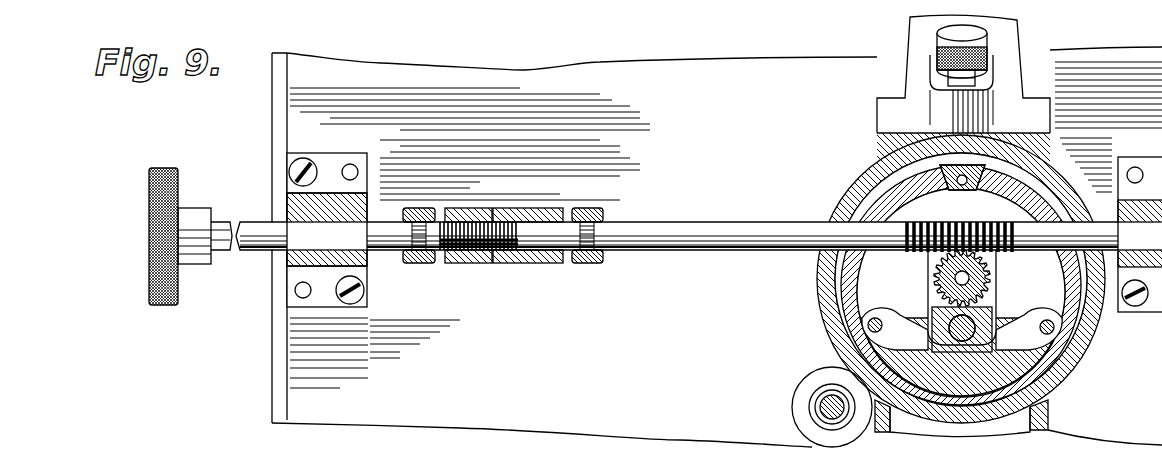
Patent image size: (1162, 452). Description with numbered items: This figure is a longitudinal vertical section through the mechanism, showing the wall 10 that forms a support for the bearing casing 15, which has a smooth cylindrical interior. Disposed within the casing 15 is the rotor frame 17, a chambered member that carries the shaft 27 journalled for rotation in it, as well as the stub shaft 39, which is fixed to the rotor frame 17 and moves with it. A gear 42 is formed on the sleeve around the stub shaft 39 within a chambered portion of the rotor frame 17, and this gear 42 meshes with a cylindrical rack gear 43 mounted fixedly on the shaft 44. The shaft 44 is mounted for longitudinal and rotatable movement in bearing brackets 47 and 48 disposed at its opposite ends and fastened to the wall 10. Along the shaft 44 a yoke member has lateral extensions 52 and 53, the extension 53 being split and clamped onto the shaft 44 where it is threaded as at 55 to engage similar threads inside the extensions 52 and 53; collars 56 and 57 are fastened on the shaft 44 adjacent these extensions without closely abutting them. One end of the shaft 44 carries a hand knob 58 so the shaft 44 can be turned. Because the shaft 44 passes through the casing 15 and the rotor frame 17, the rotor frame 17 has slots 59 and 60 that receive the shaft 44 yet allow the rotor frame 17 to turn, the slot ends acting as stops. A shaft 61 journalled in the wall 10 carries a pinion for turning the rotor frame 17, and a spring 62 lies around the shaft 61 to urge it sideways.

The wall 10 is at (717, 247).
The bearing casing 15 is at (866, 178).
The rotor frame 17 is at (1006, 342).
The shaft 27 is at (932, 321).
The stub shaft 39 is at (935, 279).
The gear 42 is at (992, 280).
The cylindrical rack gear 43 is at (964, 192).
The shaft 44 is at (664, 229).
The bearing bracket 47 is at (1140, 234).
The bearing bracket 48 is at (287, 200).
The lateral extension 52 is at (532, 266).
The lateral extension 53 is at (470, 265).
The threads 55 is at (476, 219).
The collar 56 is at (597, 265).
The collar 57 is at (413, 266).
The hand knob 58 is at (180, 177).
The slot 59 is at (1064, 222).
The slot 60 is at (846, 216).
The shaft 61 is at (826, 392).
The spring 62 is at (805, 418).